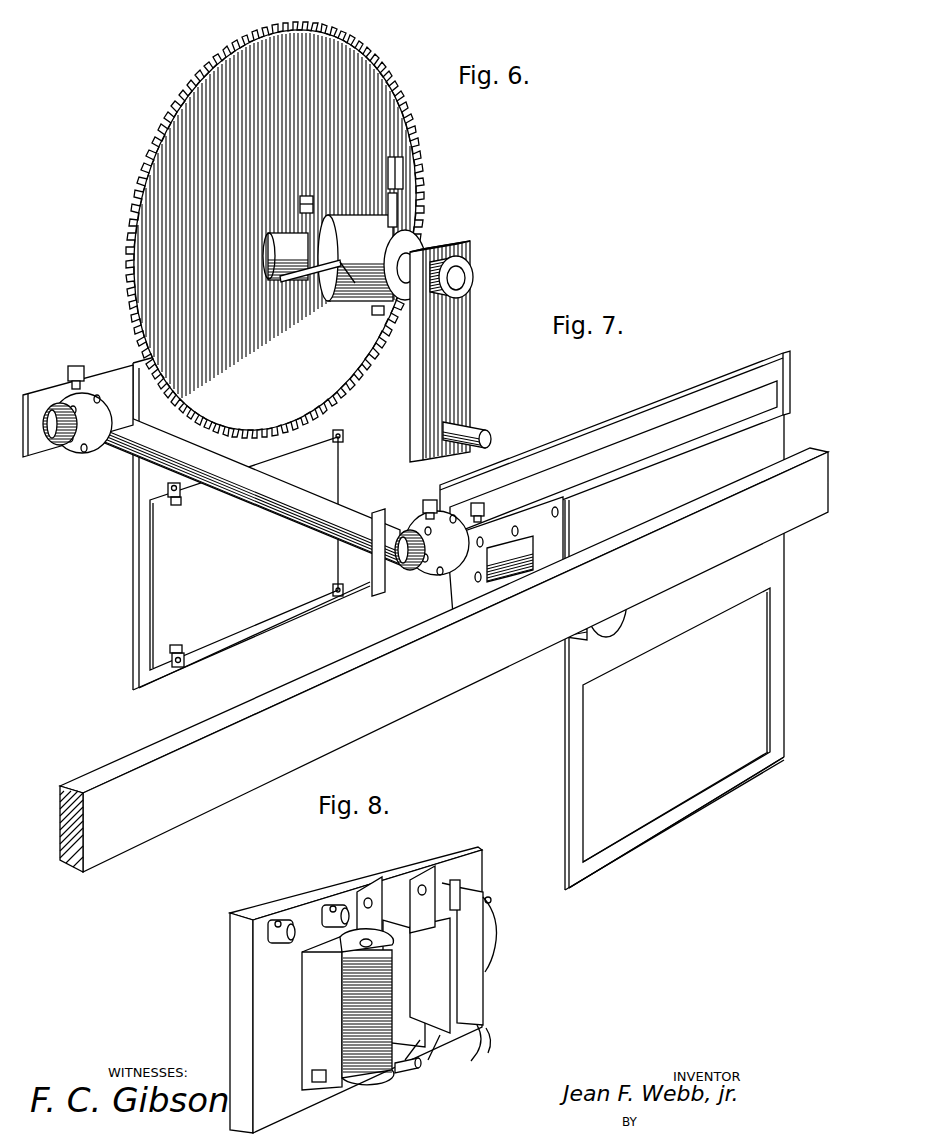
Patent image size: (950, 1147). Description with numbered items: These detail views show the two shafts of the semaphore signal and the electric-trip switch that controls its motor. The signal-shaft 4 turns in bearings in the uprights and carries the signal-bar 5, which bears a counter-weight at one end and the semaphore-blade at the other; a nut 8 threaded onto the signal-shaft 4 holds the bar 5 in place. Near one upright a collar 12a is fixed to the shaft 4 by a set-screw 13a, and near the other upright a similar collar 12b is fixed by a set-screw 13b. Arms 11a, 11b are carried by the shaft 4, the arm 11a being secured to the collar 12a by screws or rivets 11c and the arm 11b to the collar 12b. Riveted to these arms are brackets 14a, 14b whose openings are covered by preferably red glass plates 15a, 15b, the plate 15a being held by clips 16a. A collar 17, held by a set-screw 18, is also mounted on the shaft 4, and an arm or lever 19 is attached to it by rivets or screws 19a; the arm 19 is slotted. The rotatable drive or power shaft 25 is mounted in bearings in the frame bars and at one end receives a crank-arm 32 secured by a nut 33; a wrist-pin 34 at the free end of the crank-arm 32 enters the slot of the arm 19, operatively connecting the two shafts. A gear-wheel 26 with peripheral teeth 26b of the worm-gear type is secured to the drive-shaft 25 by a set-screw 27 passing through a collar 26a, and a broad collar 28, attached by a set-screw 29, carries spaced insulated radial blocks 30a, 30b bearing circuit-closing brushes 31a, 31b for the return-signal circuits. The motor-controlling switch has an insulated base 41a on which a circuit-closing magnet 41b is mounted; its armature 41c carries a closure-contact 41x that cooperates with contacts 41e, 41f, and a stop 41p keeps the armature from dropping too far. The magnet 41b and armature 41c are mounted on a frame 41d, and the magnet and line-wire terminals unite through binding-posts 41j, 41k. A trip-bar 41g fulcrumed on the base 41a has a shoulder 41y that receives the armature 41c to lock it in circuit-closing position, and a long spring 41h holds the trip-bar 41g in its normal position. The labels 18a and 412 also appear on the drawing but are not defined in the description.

In FIG. 6, the signal-shaft 4 is at (290, 505).
In FIG. 7, the signal-bar 5 is at (299, 760).
In FIG. 7, the nut 8 is at (580, 628).
In FIG. 6, the arm 11a is at (40, 400).
In FIG. 7, the arm 11b is at (450, 588).
In FIG. 6, the screws or rivets 11c is at (57, 446).
In FIG. 6, the collar 12a is at (84, 450).
In FIG. 7, the collar 12b is at (460, 515).
In FIG. 6, the set-screw 13a is at (76, 366).
In FIG. 7, the set-screw 13b is at (480, 503).
In FIG. 6, the bracket 14a is at (134, 540).
In FIG. 7, the bracket 14a is at (672, 810).
In FIG. 7, the bracket 14b is at (565, 742).
In FIG. 6, the glass plate 15a is at (300, 620).
In FIG. 7, the glass plate 15b is at (676, 725).
In FIG. 6, the clips 16a is at (186, 660).
In FIG. 7, the collar 17 is at (408, 530).
In FIG. 7, the set-screw 18 is at (430, 500).
In FIG. 6, the clip 18a is at (178, 500).
In FIG. 7, the arm or lever 19 is at (568, 470).
In FIG. 7, the rivets or screws 19a is at (404, 582).
In FIG. 6, the rotatable drive or power shaft 25 is at (330, 216).
In FIG. 6, the gear-wheel 26 is at (274, 229).
In FIG. 6, the collar 26a is at (272, 256).
In FIG. 6, the peripheral teeth 26b is at (140, 148).
In FIG. 6, the set-screw 27 is at (306, 196).
In FIG. 6, the broad collar 28 is at (418, 240).
In FIG. 6, the set-screw 29 is at (376, 316).
In FIG. 6, the insulated radial block 30a is at (398, 215).
In FIG. 6, the insulated radial block 30b is at (350, 282).
In FIG. 6, the circuit-closing brush 31a is at (404, 170).
In FIG. 6, the circuit-closing brush 31b is at (300, 277).
In FIG. 6, the crank-arm 32 is at (457, 345).
In FIG. 6, the nut 33 is at (473, 274).
In FIG. 6, the wrist-pin 34 is at (478, 430).
In FIG. 8, the insulated base 41a is at (258, 993).
In FIG. 8, the circuit-closing magnet 41b is at (357, 1078).
In FIG. 8, the armature 41c is at (418, 1050).
In FIG. 8, the frame 41d is at (348, 1009).
In FIG. 8, the contact 41e is at (378, 893).
In FIG. 8, the contact 41f is at (432, 878).
In FIG. 8, the trip-bar 41g is at (485, 998).
In FIG. 8, the long spring 41h is at (496, 930).
In FIG. 8, the binding-post 41j is at (276, 920).
In FIG. 8, the binding-post 41k is at (337, 905).
In FIG. 8, the stop 41p is at (406, 1072).
In FIG. 8, the closure-contact 41x is at (445, 1045).
In FIG. 8, the shoulder 41y is at (480, 1040).
In FIG. 8, the contact 412 is at (487, 1050).